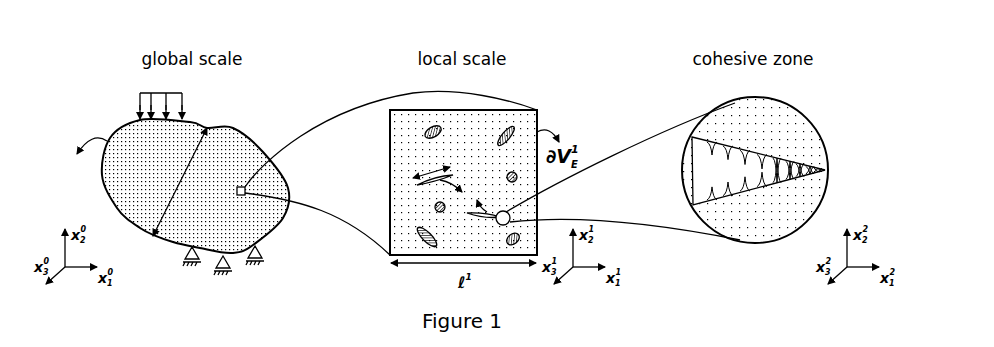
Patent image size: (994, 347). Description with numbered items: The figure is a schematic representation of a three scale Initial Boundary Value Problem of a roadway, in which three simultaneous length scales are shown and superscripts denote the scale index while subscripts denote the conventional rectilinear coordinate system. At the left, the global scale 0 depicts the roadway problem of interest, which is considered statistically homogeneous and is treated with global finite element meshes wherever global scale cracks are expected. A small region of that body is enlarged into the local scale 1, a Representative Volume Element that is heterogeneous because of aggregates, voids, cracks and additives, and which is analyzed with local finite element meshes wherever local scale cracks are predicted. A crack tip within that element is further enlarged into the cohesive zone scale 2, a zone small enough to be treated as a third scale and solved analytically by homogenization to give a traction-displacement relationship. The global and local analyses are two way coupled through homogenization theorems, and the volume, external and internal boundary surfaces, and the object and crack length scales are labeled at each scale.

The global scale 0 is at (173, 184).
The local scale 1 is at (463, 182).
The cohesive zone scale 2 is at (823, 193).